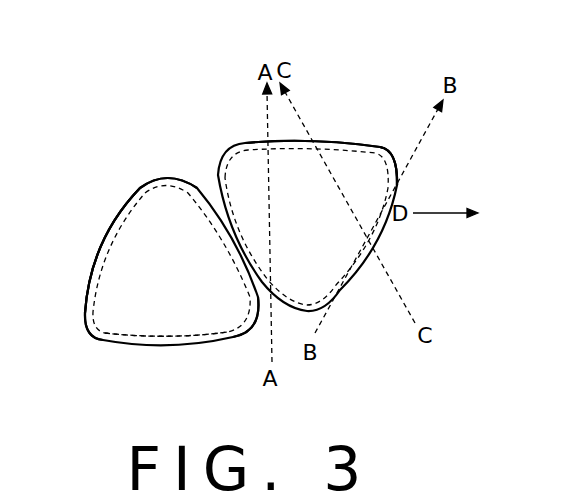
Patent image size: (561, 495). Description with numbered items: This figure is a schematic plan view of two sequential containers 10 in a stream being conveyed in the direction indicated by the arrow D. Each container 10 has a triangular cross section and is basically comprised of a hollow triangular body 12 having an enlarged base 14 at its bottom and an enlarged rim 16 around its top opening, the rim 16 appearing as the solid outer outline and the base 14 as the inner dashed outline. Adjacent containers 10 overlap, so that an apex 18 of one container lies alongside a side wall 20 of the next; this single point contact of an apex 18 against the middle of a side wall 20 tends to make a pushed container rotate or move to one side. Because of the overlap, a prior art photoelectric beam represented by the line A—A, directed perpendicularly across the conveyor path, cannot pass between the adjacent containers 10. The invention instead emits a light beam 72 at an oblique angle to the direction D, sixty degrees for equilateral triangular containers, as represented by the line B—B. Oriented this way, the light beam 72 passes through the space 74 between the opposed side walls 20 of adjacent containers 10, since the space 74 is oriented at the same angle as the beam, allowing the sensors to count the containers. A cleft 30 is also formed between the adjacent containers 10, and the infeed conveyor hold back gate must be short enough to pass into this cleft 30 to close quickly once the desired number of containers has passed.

The container 10 is at (95, 223).
The hollow triangular body 12 is at (122, 202).
The enlarged base 14 is at (87, 287).
The enlarged rim 16 is at (97, 257).
The apex 18 is at (168, 177).
The side wall 20 is at (145, 350).
The cleft 30 is at (281, 338).
The light beam 72 is at (408, 162).
The space 74 is at (203, 170).